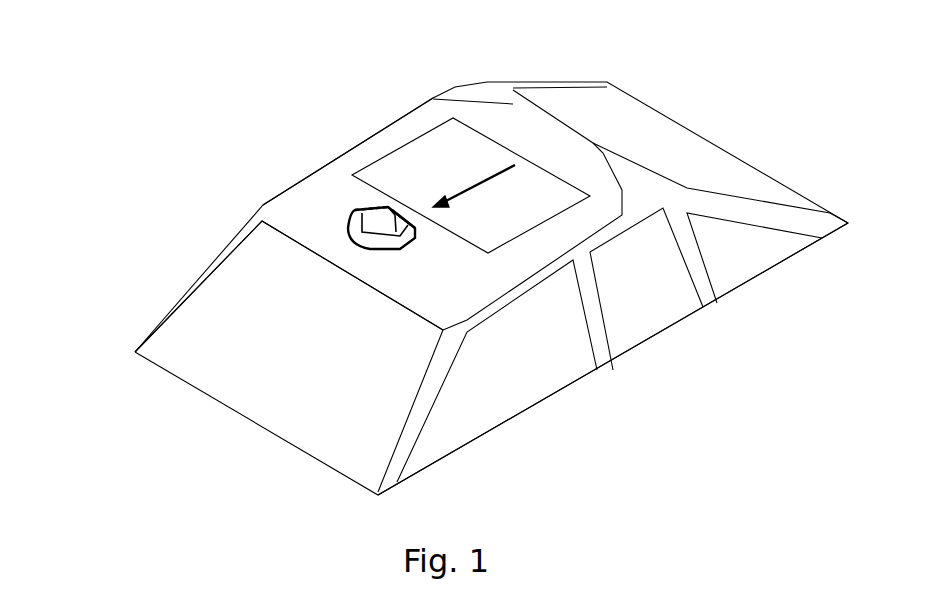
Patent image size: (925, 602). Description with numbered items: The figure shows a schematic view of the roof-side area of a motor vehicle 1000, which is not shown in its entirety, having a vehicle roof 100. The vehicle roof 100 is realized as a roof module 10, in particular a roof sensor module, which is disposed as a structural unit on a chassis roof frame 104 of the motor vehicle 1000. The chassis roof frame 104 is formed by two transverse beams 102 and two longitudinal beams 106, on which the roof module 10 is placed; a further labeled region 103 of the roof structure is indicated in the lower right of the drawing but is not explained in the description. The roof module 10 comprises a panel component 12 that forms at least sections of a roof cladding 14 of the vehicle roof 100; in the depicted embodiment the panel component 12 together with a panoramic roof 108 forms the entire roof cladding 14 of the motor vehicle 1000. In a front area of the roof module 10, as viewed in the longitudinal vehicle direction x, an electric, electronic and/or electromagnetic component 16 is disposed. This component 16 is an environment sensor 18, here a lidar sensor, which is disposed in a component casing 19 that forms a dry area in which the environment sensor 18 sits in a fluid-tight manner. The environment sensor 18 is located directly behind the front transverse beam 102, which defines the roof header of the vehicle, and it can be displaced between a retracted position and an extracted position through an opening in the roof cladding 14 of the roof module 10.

The motor vehicle 1000 is at (172, 244).
The vehicle roof 100 is at (197, 177).
The roof module 10 is at (536, 135).
The panel component 12 is at (410, 125).
The roof cladding 14 is at (312, 177).
The component 16 is at (385, 230).
The environment sensor 18 is at (356, 215).
The component casing 19 is at (398, 215).
The transverse beam 102 is at (593, 143).
The base portion 103 is at (662, 392).
The chassis roof frame 104 is at (538, 272).
The longitudinal beam 106 is at (275, 202).
The panoramic roof 108 is at (465, 163).